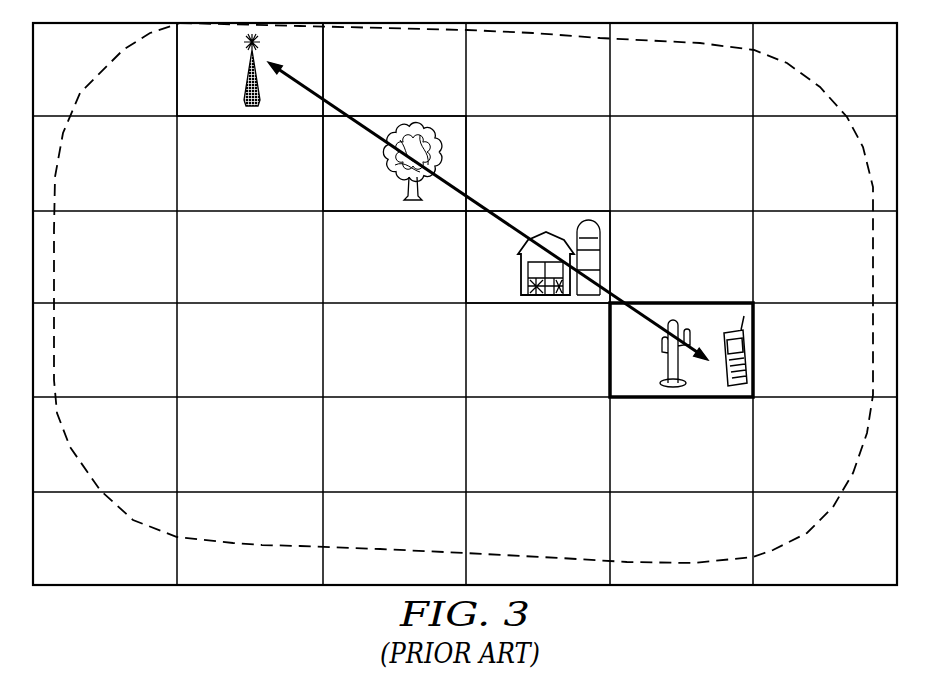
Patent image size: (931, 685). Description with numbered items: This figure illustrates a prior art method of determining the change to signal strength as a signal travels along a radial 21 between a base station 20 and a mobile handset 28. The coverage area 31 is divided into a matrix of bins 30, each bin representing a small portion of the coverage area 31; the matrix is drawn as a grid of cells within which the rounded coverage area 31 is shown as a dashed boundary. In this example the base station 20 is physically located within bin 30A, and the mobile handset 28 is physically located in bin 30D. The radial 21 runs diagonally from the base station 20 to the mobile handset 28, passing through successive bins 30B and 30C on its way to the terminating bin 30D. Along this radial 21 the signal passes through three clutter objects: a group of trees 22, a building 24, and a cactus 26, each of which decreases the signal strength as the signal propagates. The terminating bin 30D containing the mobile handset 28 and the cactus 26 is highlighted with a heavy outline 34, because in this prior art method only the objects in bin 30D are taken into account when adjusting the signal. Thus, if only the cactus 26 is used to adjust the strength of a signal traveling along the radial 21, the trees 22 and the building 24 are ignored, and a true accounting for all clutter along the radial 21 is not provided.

The base station 20 is at (247, 80).
The radial 21 is at (336, 107).
The trees 22 is at (386, 160).
The building 24 is at (520, 275).
The cactus 26 is at (666, 370).
The mobile handset 28 is at (724, 345).
The matrix of bins 30 is at (88, 586).
The bin 30A is at (225, 108).
The bin 30B is at (369, 203).
The bin 30C is at (542, 217).
The bin 30D is at (698, 390).
The coverage area 31 is at (262, 545).
The selected bin 34 is at (755, 351).